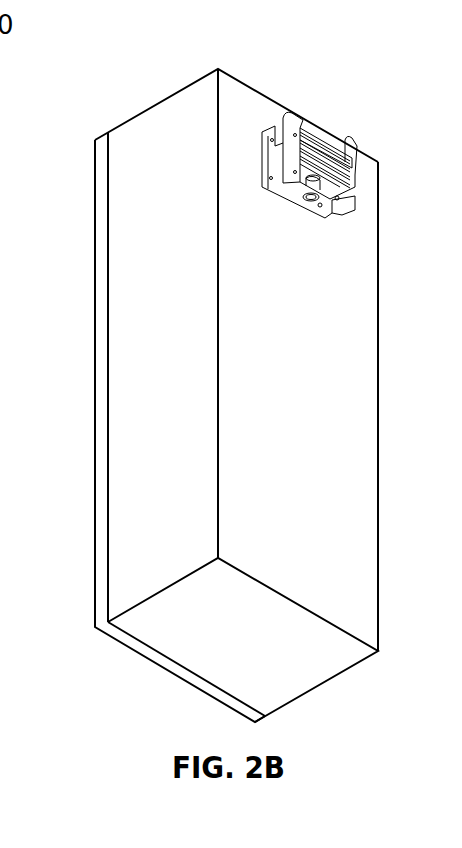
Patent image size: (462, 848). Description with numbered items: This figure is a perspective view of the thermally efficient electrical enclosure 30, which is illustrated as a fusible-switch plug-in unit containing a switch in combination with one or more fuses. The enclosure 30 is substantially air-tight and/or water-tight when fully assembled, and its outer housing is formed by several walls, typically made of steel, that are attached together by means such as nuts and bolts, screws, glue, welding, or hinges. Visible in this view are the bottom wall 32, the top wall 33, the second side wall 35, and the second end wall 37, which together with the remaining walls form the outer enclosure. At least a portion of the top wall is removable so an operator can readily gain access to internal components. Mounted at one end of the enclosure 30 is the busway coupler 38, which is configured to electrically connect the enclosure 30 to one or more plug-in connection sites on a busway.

The thermally efficient electrical enclosure 30 is at (280, 90).
The bottom wall 32 is at (311, 383).
The top wall 33 is at (95, 263).
The second side wall 35 is at (177, 403).
The second end wall 37 is at (255, 651).
The busway coupler 38 is at (342, 127).